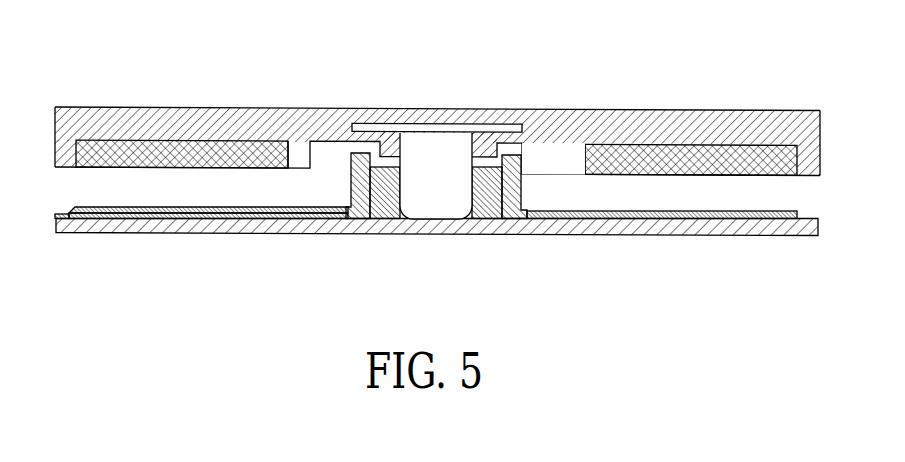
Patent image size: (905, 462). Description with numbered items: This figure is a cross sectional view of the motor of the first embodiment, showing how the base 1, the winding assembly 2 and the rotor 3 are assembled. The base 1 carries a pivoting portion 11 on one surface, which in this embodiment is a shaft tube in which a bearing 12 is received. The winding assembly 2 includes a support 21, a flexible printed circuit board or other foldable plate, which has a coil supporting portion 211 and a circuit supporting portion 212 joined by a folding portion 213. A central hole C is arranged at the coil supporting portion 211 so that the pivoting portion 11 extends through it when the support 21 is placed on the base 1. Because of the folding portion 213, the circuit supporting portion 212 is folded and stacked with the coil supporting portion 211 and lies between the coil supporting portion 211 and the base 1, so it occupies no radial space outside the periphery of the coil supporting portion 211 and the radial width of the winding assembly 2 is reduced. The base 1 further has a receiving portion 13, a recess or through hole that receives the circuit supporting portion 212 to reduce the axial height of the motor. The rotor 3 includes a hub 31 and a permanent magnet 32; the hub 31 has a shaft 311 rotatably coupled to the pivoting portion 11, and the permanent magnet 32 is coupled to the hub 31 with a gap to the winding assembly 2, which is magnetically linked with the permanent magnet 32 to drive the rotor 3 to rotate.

The base 1 is at (558, 276).
The pivoting portion 11 is at (352, 198).
The bearing 12 is at (390, 198).
The receiving portion 13 is at (254, 236).
The winding assembly 2 is at (300, 176).
The support 21 is at (162, 50).
The coil supporting portion 211 is at (155, 212).
The circuit supporting portion 212 is at (123, 217).
The folding portion 213 is at (55, 213).
The rotor 3 is at (585, 55).
The hub 31 is at (734, 120).
The shaft 311 is at (446, 200).
The permanent magnet 32 is at (663, 148).
The central hole C is at (524, 166).